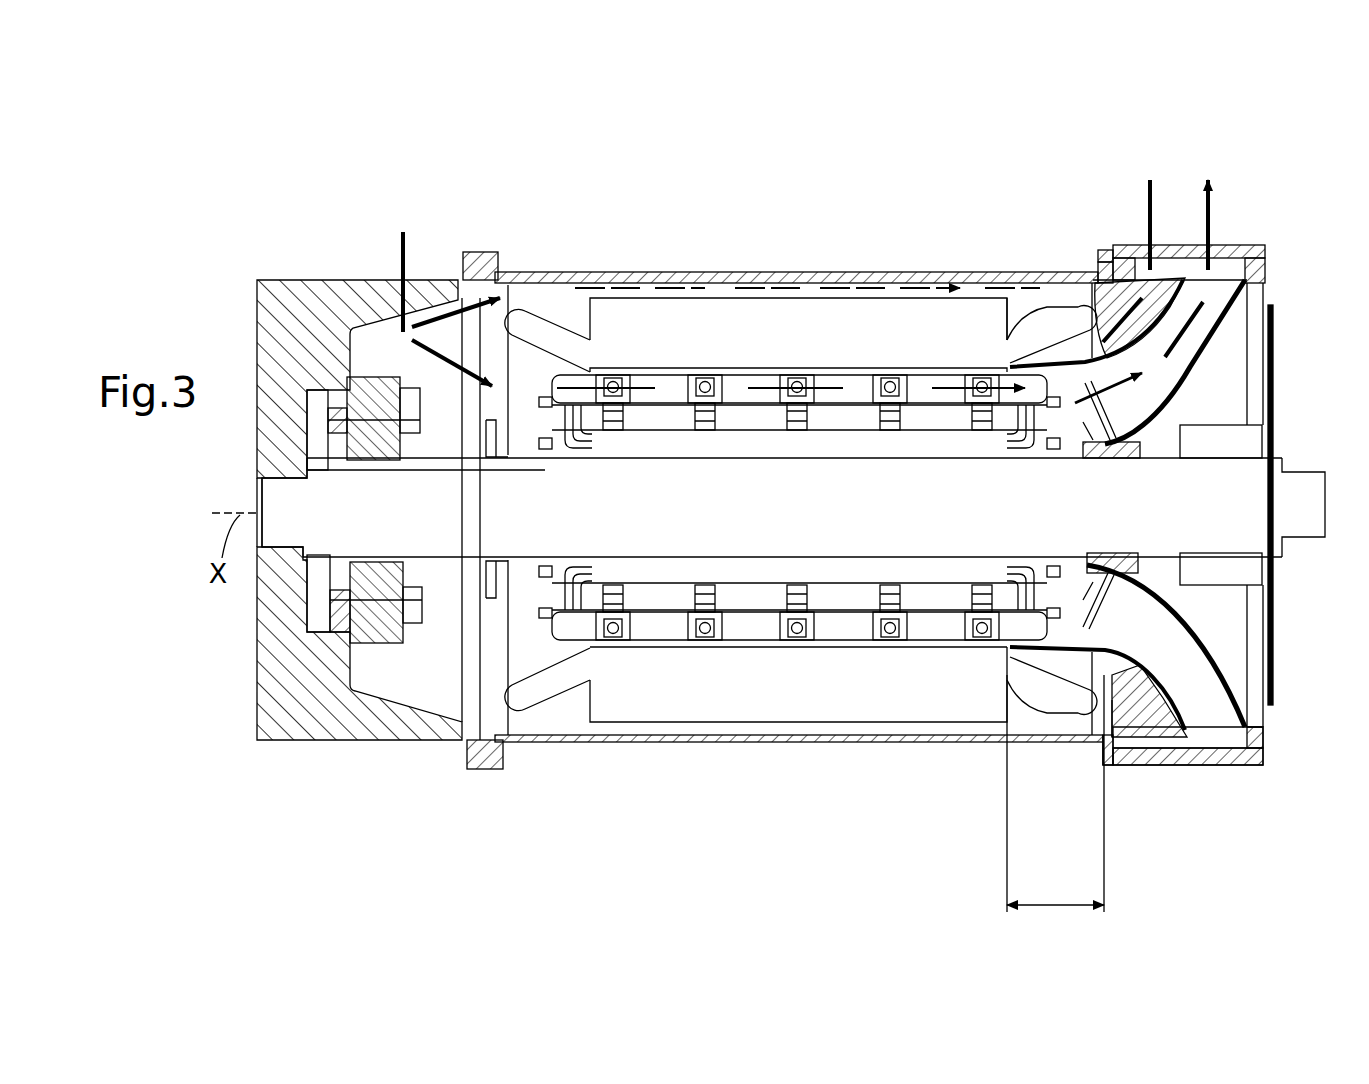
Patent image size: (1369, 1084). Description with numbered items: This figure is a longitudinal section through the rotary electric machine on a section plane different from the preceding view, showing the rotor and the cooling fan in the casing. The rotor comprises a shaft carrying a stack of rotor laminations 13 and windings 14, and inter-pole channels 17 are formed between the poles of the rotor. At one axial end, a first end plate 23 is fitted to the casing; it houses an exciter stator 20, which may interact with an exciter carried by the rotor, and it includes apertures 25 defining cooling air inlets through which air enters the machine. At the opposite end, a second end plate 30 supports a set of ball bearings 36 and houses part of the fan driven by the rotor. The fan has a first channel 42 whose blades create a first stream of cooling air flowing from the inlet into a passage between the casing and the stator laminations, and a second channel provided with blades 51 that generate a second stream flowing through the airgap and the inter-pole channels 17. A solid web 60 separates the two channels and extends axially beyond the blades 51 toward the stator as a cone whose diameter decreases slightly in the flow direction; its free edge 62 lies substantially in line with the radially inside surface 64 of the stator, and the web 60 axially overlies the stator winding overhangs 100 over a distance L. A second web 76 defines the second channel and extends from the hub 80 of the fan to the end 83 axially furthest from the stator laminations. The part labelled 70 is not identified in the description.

The rotor laminations 13 is at (687, 568).
The windings 14 is at (567, 627).
The inter-pole channels 17 is at (740, 383).
The exciter stator 20 is at (370, 407).
The first end plate 23 is at (292, 705).
The apertures 25 is at (385, 685).
The second end plate 30 is at (1262, 668).
The ball bearings 36 is at (1258, 438).
The first channel 42 is at (1150, 305).
The blades 51 is at (1108, 765).
The solid web 60 is at (1035, 320).
The free edge 62 is at (1005, 645).
The radially inside surface 64 is at (985, 380).
The fan back plate 70 is at (1163, 740).
The second web 76 is at (1262, 765).
The hub 80 is at (1110, 567).
The end 83 is at (1263, 740).
The stator winding overhangs 100 is at (1045, 690).